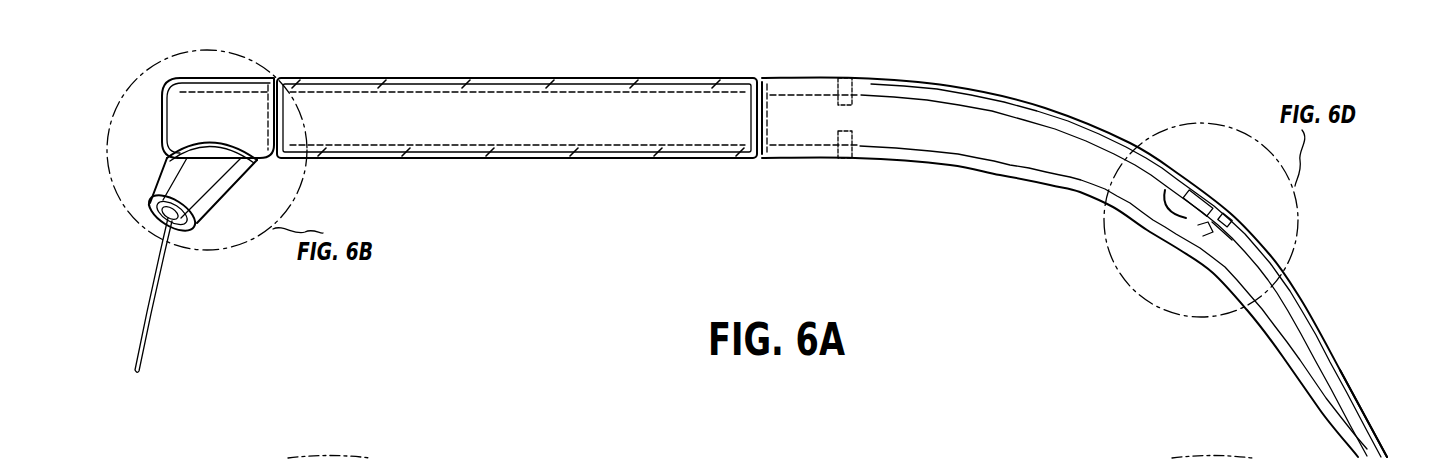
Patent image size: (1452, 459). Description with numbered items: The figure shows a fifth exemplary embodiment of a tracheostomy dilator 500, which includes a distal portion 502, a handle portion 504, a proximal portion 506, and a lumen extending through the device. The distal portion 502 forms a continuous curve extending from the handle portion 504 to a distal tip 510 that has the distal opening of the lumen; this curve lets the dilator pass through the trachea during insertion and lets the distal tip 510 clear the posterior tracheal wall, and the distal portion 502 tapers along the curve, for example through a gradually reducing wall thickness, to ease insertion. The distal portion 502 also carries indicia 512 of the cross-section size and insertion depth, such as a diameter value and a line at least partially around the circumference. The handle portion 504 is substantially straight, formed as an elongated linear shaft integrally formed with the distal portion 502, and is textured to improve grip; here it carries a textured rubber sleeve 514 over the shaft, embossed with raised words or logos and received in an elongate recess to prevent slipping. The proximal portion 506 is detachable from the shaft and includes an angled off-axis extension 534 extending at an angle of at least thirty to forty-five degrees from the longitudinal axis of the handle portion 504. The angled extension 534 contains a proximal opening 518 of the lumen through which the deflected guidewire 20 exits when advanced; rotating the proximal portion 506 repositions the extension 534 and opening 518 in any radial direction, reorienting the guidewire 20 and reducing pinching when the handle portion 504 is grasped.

The tracheostomy dilator 500 is at (1236, 90).
The distal portion 502 is at (1100, 135).
The handle portion 504 is at (527, 102).
The proximal portion 506 is at (208, 95).
The distal tip 510 is at (1403, 452).
The indicia 512 is at (1232, 215).
The textured rubber sleeve 514 is at (705, 103).
The proximal opening 518 is at (155, 222).
The angled off-axis extension 534 is at (211, 177).
The guidewire 20 is at (153, 307).